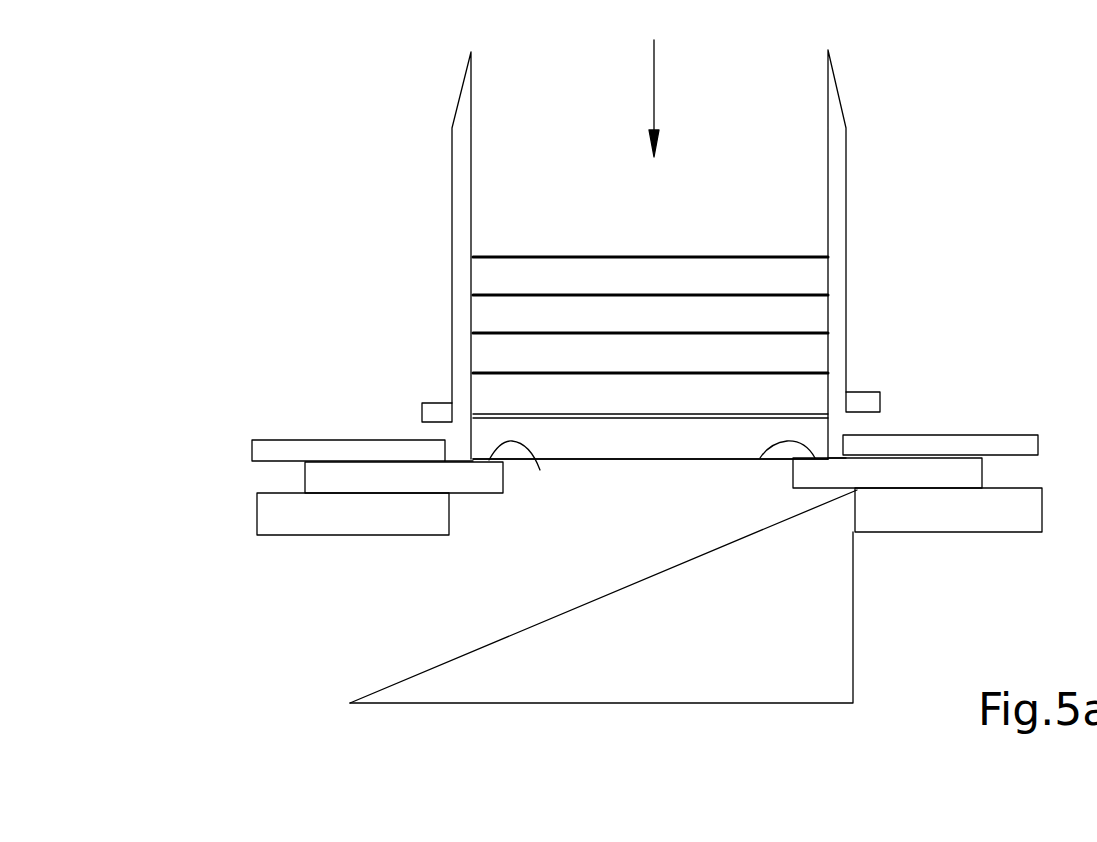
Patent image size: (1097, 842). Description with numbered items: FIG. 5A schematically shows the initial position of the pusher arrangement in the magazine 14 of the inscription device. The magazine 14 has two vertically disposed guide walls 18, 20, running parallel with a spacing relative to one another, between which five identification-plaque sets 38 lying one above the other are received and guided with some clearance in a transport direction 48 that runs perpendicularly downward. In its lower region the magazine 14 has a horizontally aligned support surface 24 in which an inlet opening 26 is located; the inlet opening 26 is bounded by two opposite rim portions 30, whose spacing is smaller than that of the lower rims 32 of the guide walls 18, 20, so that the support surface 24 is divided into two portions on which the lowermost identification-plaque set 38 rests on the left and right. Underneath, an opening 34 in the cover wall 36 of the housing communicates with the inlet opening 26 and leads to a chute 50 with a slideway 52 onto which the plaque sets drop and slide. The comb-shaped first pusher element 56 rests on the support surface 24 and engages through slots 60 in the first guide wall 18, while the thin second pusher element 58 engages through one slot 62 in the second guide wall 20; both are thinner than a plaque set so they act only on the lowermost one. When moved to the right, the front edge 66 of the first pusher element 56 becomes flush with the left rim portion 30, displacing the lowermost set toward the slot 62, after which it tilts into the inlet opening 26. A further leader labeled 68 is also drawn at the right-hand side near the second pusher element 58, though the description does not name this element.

The magazine 14 is at (870, 89).
The first guide wall 18 is at (452, 155).
The second guide wall 20 is at (840, 155).
The support surface 24 is at (540, 470).
The inlet opening 26 is at (610, 487).
The rim portions 30 is at (503, 478).
The lower rims 32 is at (450, 402).
The opening 34 is at (459, 509).
The cover wall 36 is at (308, 522).
The identification-plaque sets 38 is at (640, 440).
The transport direction 48 is at (656, 72).
The chute 50 is at (358, 600).
The slideway 52 is at (505, 640).
The first pusher element 56 is at (310, 448).
The second pusher element 58 is at (953, 445).
The slots 60 is at (460, 432).
The slot 62 is at (837, 428).
The front edge 66 is at (449, 452).
The guide 68 is at (834, 452).